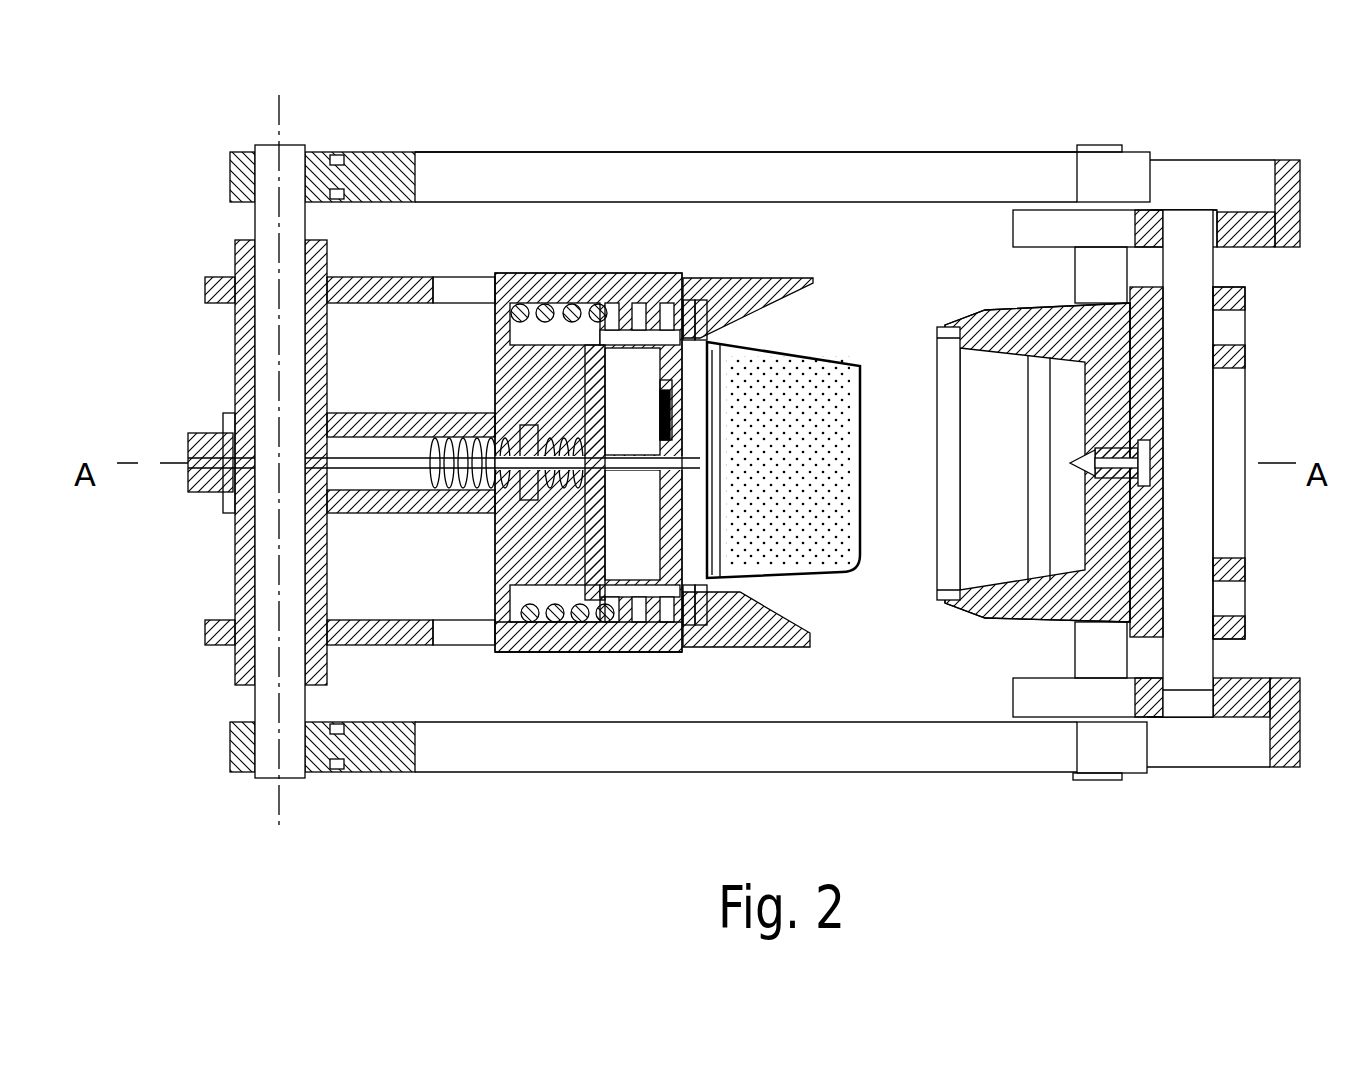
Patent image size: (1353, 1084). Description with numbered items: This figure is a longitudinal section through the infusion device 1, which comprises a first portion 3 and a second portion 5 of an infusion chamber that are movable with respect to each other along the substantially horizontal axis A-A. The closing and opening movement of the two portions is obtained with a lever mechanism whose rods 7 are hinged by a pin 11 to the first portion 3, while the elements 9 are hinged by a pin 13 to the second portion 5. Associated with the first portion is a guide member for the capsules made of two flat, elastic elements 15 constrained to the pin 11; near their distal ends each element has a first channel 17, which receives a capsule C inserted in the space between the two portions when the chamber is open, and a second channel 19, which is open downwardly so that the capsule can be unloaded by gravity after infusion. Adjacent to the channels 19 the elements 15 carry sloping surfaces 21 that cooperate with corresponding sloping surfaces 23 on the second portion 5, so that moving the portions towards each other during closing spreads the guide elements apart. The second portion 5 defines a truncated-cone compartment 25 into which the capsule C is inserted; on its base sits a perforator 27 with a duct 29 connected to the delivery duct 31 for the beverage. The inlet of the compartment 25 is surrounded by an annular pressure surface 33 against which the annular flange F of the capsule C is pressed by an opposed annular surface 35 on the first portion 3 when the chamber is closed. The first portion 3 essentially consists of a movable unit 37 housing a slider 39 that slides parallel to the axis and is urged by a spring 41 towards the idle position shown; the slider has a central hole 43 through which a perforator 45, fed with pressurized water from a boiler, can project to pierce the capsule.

The infusion device 1 is at (938, 128).
The first portion of the infusion chamber 3 is at (604, 652).
The second portion of the infusion chamber 5 is at (1013, 636).
The rods of the lever mechanism 7 is at (852, 170).
The elements of the lever mechanism 9 is at (1200, 182).
The pin 11 is at (270, 350).
The pin 13 is at (1195, 270).
The elements of the capsule guide member 15 is at (380, 278).
The first channel 17 is at (700, 280).
The second channel 19 is at (740, 292).
The sloping surfaces 21 is at (812, 300).
The sloping surfaces 23 is at (948, 328).
The compartment 25 is at (985, 458).
The perforator 27 is at (1085, 452).
The duct or channel 29 is at (1090, 472).
The duct for delivery of the beverage 31 is at (1150, 463).
The annular stop or pressure surface 33 is at (935, 600).
The opposed annular surface 35 is at (662, 640).
The movable unit 37 is at (580, 275).
The slider 39 is at (642, 300).
The spring 41 is at (548, 652).
The central hole 43 is at (690, 462).
The perforator 45 is at (680, 410).
The capsule C is at (822, 356).
The annular flange of the capsule F is at (690, 565).